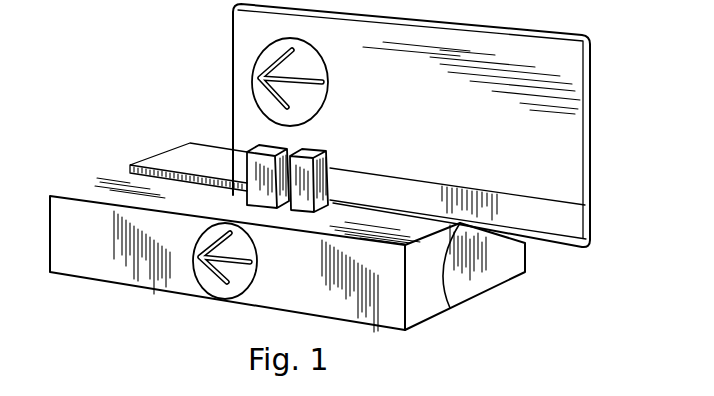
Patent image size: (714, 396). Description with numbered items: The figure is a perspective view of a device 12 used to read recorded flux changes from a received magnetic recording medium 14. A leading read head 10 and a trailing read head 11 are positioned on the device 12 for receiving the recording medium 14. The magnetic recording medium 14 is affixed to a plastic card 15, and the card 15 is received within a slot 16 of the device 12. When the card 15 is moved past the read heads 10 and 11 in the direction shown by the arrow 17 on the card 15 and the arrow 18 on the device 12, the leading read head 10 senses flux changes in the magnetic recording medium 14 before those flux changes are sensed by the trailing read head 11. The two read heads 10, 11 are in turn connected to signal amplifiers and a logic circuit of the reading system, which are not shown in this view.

The leading read head 10 is at (316, 151).
The trailing read head 11 is at (258, 148).
The device 12 is at (100, 182).
The magnetic recording medium 14 is at (553, 210).
The plastic card 15 is at (572, 78).
The slot 16 is at (447, 296).
The arrow on the card 17 is at (263, 63).
The arrow on the device 18 is at (205, 276).